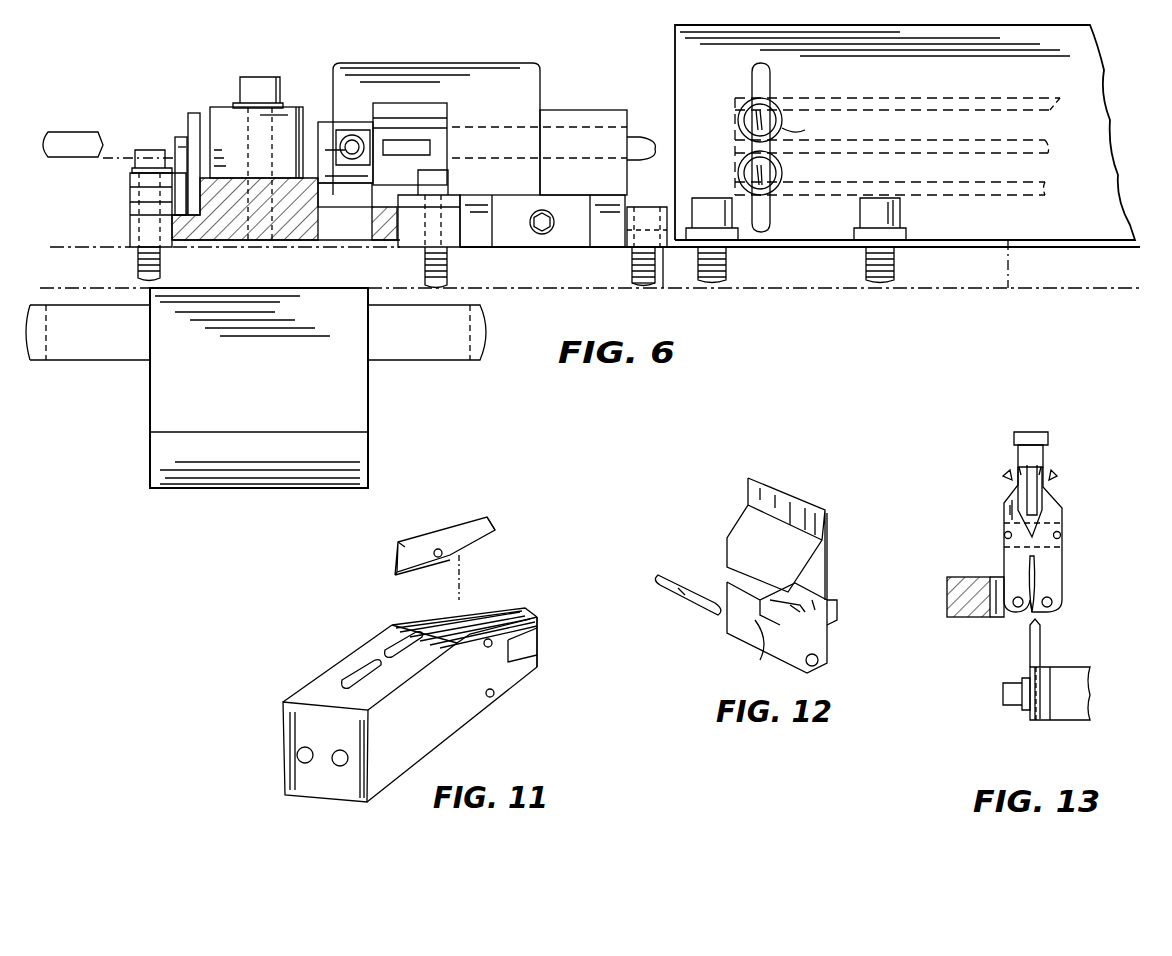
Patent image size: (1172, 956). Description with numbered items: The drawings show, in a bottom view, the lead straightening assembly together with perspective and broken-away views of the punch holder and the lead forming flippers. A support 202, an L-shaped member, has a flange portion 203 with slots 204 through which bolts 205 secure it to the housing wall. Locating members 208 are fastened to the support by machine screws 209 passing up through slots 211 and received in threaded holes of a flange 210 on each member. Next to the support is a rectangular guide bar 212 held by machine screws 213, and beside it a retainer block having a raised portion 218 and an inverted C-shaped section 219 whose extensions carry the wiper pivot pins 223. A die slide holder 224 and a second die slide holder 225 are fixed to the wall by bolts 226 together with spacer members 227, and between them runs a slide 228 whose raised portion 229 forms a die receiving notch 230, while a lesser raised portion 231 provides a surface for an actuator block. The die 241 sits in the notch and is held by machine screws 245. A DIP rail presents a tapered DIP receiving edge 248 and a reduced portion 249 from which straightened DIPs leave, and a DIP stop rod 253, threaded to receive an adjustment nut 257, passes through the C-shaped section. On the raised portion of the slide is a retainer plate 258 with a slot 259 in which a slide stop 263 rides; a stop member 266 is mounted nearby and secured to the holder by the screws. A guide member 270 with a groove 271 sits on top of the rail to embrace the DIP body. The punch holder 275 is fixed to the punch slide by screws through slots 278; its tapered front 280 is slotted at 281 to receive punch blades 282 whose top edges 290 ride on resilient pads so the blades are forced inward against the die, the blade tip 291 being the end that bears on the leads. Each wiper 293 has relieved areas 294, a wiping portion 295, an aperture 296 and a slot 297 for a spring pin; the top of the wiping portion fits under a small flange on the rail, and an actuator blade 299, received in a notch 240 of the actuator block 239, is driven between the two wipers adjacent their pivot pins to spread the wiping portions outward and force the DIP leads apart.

In FIG. 6, the support 202 is at (1035, 250).
In FIG. 6, the flange portion 203 is at (815, 253).
In FIG. 6, the slots 204 is at (892, 247).
In FIG. 6, the bolts 205 is at (904, 222).
In FIG. 6, the locating members 208 is at (905, 100).
In FIG. 6, the machine screws 209 is at (816, 129).
In FIG. 6, the flange 210 is at (735, 128).
In FIG. 6, the slots 211 is at (770, 78).
In FIG. 6, the rectangular guide bar 212 is at (665, 255).
In FIG. 6, the machine screws 213 is at (640, 283).
In FIG. 6, the raised portion 218 is at (578, 110).
In FIG. 6, the inverted C-shaped section 219 is at (480, 112).
In FIG. 6, the wiper pivot pins 223 is at (507, 157).
In FIG. 13, the wiper pivot pins 223 is at (1053, 602).
In FIG. 6, the die slide holder 224 is at (458, 240).
In FIG. 6, the second die slide holder 225 is at (130, 232).
In FIG. 6, the bolts 226 is at (134, 168).
In FIG. 6, the spacer members 227 is at (130, 240).
In FIG. 6, the slide 228 is at (215, 243).
In FIG. 6, the raised portion 229 is at (238, 205).
In FIG. 6, the die receiving notch 230 is at (282, 210).
In FIG. 6, the lesser raised portion 231 is at (345, 215).
In FIG. 13, the bracket 239 is at (1068, 720).
In FIG. 13, the notch 240 is at (1038, 712).
In FIG. 6, the die 241 is at (250, 110).
In FIG. 6, the machine screws 245 is at (250, 80).
In FIG. 6, the tapered DIP receiving edge 248 is at (636, 140).
In FIG. 13, the tapered DIP receiving edge 248 is at (1040, 492).
In FIG. 6, the reduced portion 249 is at (60, 135).
In FIG. 6, the DIP stop rod 253 is at (345, 135).
In FIG. 6, the adjustment nut 257 is at (348, 138).
In FIG. 6, the retainer plate 258 is at (194, 120).
In FIG. 6, the slot 259 is at (188, 140).
In FIG. 6, the slide stop 263 is at (250, 127).
In FIG. 6, the stop member 266 is at (178, 148).
In FIG. 13, the guide member 270 is at (1050, 437).
In FIG. 13, the groove 271 is at (1030, 440).
In FIG. 11, the punch holder 275 is at (312, 692).
In FIG. 11, the slots 278 is at (362, 670).
In FIG. 11, the tapered front 280 is at (500, 685).
In FIG. 11, the slots 281 is at (430, 622).
In FIG. 11, the punch blades 282 is at (462, 520).
In FIG. 11, the top edges 290 is at (402, 540).
In FIG. 11, the plate tip 291 is at (493, 533).
In FIG. 12, the wiper 293 is at (727, 636).
In FIG. 13, the wiper 293 is at (1064, 555).
In FIG. 12, the relieved areas 294 is at (830, 645).
In FIG. 13, the relieved areas 294 is at (1027, 560).
In FIG. 12, the wiping portion 295 is at (780, 490).
In FIG. 13, the wiping portion 295 is at (1010, 495).
In FIG. 12, the aperture 296 is at (768, 655).
In FIG. 13, the aperture 296 is at (1062, 535).
In FIG. 12, the slot 297 is at (808, 600).
In FIG. 13, the slot 297 is at (1003, 533).
In FIG. 13, the actuator blade 299 is at (1042, 655).